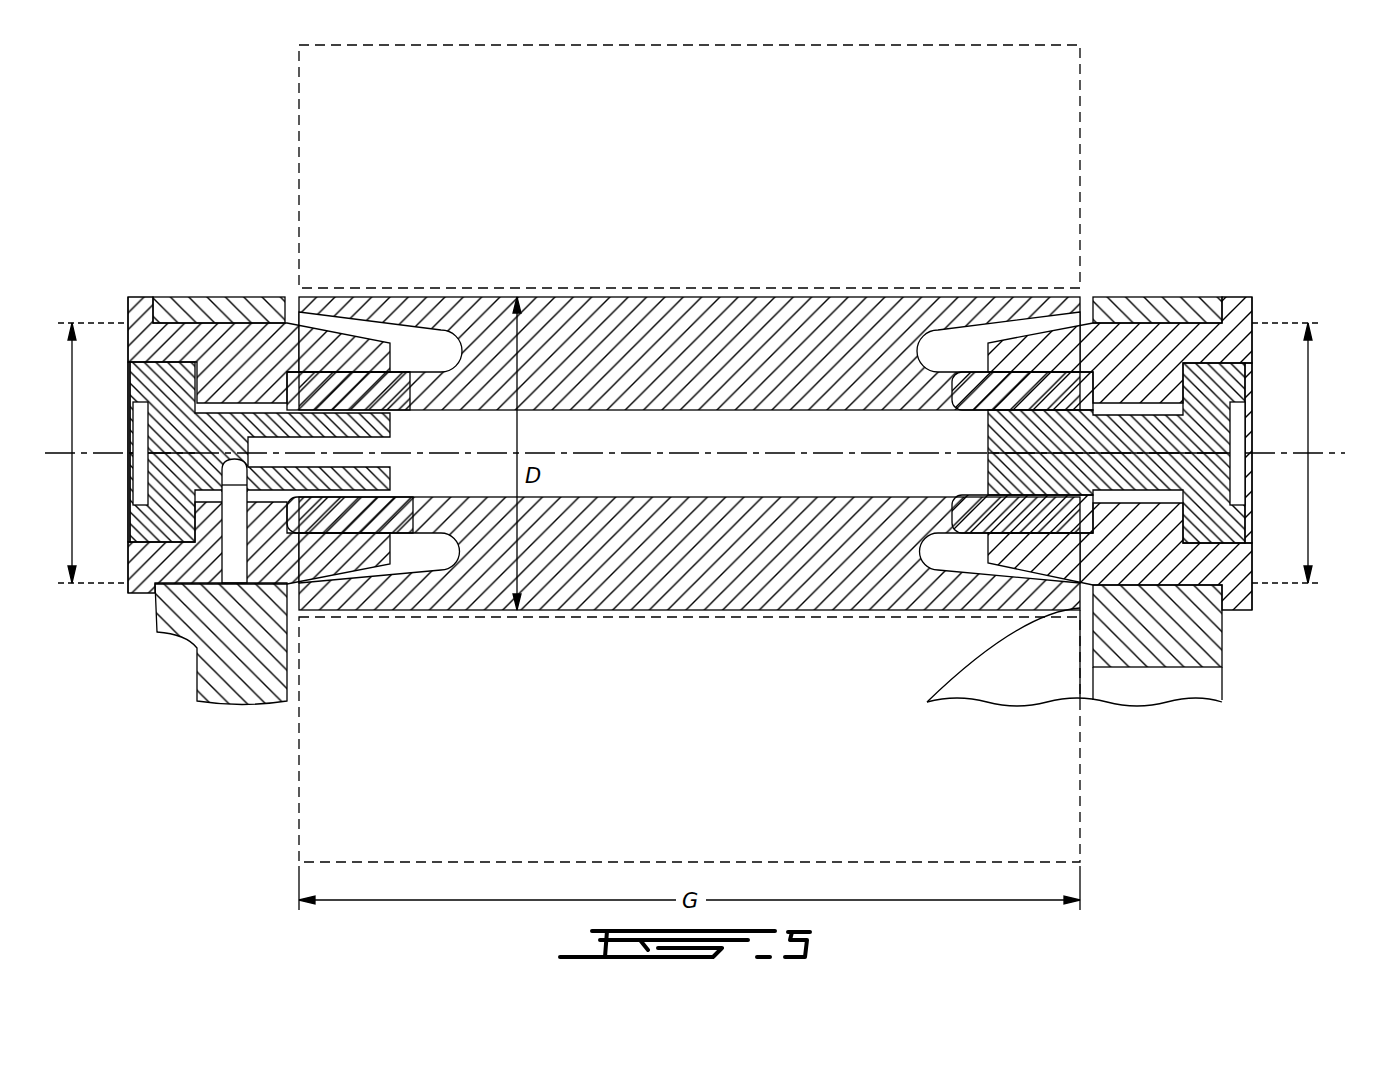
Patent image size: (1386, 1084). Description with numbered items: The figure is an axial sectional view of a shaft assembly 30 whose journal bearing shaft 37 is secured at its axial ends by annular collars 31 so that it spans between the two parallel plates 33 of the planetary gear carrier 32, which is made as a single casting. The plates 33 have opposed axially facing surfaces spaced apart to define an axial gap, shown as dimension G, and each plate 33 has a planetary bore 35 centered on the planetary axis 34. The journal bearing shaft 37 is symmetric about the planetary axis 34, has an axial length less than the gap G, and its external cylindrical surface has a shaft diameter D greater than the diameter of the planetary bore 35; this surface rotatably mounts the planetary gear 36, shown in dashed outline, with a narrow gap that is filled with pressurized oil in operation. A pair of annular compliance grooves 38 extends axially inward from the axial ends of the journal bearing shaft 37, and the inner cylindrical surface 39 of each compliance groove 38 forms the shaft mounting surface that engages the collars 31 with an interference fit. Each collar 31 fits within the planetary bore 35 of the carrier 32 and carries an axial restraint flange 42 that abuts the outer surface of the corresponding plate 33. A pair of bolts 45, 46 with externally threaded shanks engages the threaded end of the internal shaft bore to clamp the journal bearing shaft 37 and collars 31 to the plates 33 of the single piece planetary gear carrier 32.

The shaft assembly 30 is at (1107, 232).
The collar 31 is at (230, 360).
The planetary gear carrier 32 is at (240, 702).
The plates 33 is at (240, 297).
The planetary axis 34 is at (742, 452).
The planetary bore 35 is at (72, 500).
The planetary gear 36 is at (709, 117).
The journal bearing shaft 37 is at (687, 335).
The compliance grooves 38 is at (403, 306).
The inner cylindrical surface 39 is at (414, 515).
The axial restraint flange 42 is at (143, 297).
The bolt 45 is at (140, 432).
The bolt 46 is at (1238, 428).